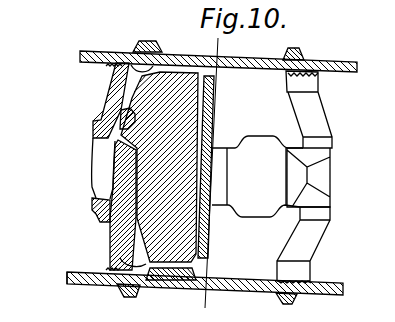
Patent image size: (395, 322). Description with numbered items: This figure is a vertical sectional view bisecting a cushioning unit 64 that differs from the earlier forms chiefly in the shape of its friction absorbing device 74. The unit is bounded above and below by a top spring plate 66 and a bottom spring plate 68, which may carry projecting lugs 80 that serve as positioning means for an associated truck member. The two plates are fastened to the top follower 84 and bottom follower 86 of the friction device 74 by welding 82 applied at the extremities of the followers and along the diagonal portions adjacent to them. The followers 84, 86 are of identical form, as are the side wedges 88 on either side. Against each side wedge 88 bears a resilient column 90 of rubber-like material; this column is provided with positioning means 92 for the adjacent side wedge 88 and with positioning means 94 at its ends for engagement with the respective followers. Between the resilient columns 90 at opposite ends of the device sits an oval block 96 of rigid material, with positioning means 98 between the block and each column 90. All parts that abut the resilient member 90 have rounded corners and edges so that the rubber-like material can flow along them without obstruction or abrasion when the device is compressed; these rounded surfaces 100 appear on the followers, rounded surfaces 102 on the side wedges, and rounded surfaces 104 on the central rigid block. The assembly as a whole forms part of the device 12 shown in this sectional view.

The assembly 12 is at (376, 160).
The cushioning unit 64 is at (62, 269).
The top spring plate 66 is at (185, 52).
The bottom spring plate 68 is at (227, 291).
The friction absorbing device 74 is at (336, 121).
The projecting lugs 80 is at (141, 44).
The welding 82 is at (112, 65).
The top follower 84 is at (115, 90).
The bottom follower 86 is at (92, 201).
The side wedges 88 is at (324, 176).
The resilient column 90 is at (110, 175).
The positioning means 92 is at (98, 156).
The positioning means 94 is at (218, 79).
The oval block 96 is at (208, 138).
The positioning means 98 is at (215, 160).
The rounded surfaces 100 is at (133, 63).
The rounded surfaces 102 is at (120, 115).
The rounded surfaces 104 is at (208, 137).